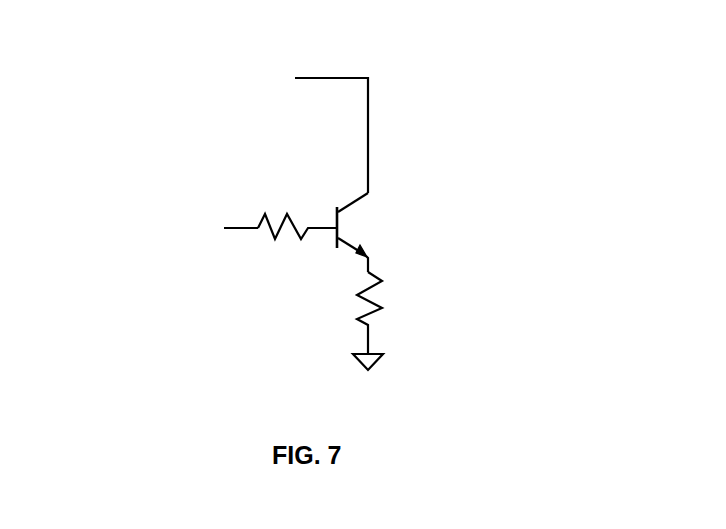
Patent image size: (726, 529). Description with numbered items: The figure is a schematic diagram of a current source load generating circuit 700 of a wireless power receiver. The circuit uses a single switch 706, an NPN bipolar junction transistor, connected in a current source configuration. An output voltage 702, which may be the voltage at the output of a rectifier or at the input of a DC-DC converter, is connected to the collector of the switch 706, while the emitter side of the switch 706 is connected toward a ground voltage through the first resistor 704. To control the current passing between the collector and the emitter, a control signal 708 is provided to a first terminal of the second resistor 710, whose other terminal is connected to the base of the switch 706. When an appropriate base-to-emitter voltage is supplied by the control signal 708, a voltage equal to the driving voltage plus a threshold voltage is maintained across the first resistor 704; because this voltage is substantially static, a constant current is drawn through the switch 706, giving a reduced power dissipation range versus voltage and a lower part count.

The current source load generating circuit 700 is at (153, 53).
The voltage Vout 702 is at (273, 58).
The resistor R1 704 is at (402, 283).
The switch 706 is at (381, 204).
The control signal 708 is at (180, 213).
The resistor R2 710 is at (292, 187).